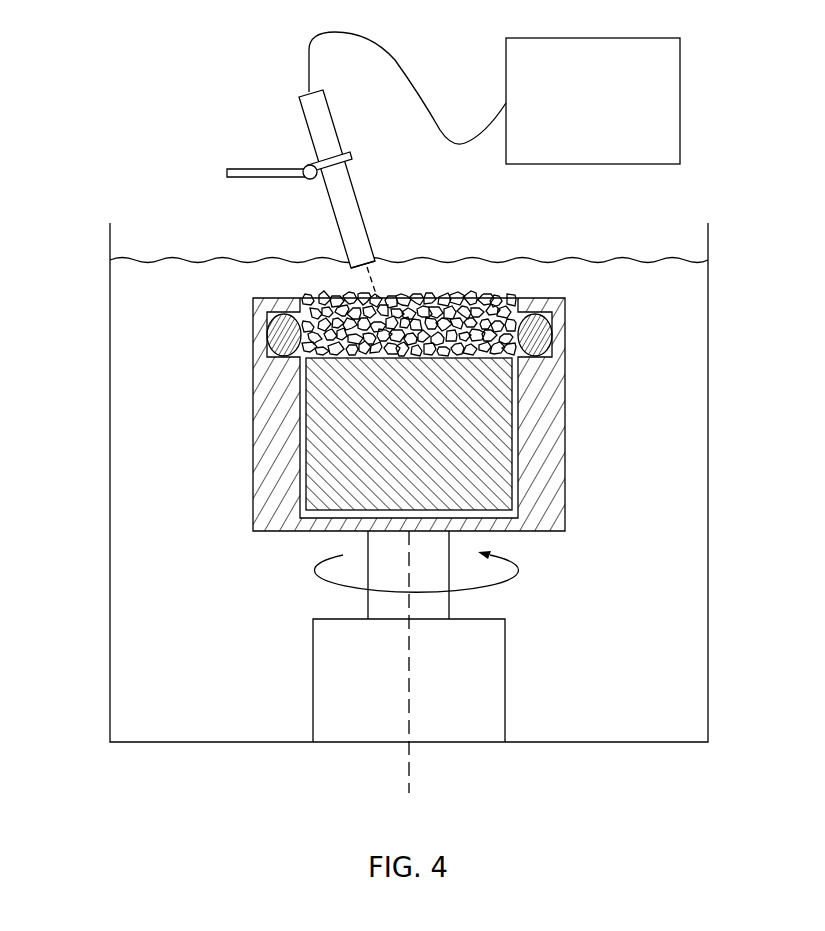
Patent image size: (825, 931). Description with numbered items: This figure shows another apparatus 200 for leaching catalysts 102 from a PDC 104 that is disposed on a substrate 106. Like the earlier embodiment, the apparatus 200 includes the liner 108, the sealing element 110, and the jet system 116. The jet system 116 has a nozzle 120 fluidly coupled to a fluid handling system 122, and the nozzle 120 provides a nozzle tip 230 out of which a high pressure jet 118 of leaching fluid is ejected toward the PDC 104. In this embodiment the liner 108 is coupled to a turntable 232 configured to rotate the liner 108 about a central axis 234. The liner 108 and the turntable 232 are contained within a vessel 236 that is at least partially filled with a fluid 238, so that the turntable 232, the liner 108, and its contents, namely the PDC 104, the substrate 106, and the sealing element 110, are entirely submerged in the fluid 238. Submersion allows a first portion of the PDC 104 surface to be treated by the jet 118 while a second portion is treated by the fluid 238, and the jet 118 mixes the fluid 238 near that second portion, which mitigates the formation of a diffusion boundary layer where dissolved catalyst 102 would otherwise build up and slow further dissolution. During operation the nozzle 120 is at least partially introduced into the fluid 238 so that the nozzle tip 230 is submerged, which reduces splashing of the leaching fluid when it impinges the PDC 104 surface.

The apparatus 200 is at (126, 114).
The catalysts 102 is at (467, 290).
The PDC 104 is at (436, 313).
The substrate 106 is at (424, 449).
The liner 108 is at (566, 331).
The sealing element 110 is at (540, 372).
The jet system 116 is at (434, 78).
The jet 118 is at (369, 280).
The nozzle 120 is at (359, 207).
The fluid handling system 122 is at (614, 112).
The nozzle tip 230 is at (380, 268).
The turntable 232 is at (359, 710).
The central axis 234 is at (410, 767).
The vessel 236 is at (708, 387).
The fluid 238 is at (650, 464).